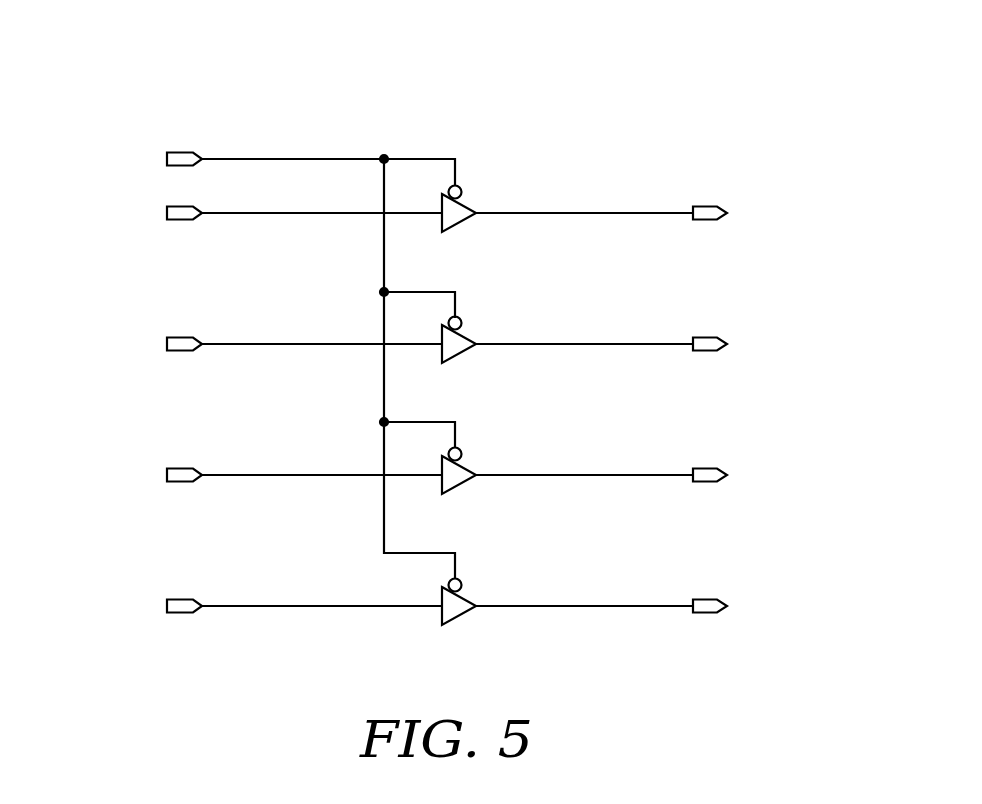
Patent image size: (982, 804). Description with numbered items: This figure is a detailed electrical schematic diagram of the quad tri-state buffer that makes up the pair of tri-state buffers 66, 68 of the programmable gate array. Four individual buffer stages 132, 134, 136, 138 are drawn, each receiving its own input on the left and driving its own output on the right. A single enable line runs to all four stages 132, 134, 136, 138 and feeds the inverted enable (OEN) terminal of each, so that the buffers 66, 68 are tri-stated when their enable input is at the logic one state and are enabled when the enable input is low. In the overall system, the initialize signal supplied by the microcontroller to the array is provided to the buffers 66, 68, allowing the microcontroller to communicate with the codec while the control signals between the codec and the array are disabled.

The tri-state buffer 66 is at (455, 333).
The tri-state buffer 68 is at (455, 333).
The tri-state buffer 132 is at (458, 216).
The tri-state buffer 134 is at (458, 347).
The tri-state buffer 136 is at (458, 478).
The tri-state buffer 138 is at (458, 609).